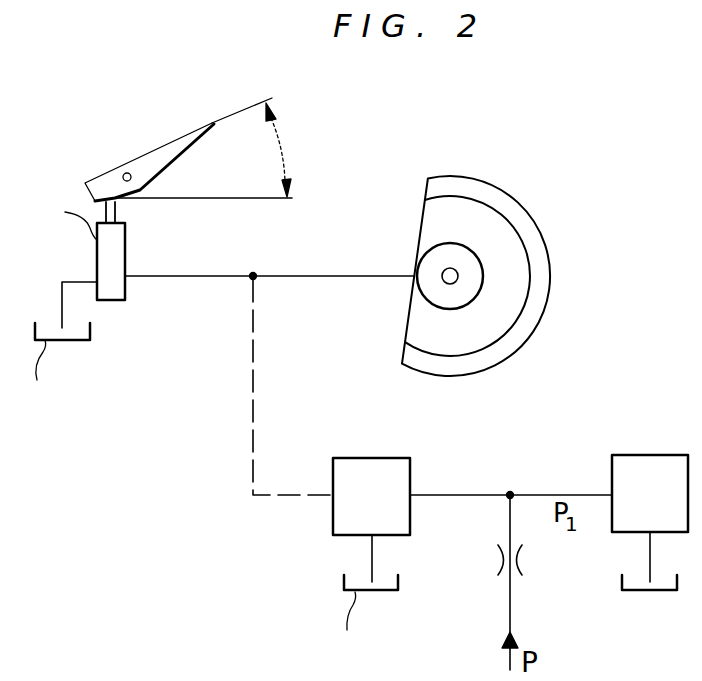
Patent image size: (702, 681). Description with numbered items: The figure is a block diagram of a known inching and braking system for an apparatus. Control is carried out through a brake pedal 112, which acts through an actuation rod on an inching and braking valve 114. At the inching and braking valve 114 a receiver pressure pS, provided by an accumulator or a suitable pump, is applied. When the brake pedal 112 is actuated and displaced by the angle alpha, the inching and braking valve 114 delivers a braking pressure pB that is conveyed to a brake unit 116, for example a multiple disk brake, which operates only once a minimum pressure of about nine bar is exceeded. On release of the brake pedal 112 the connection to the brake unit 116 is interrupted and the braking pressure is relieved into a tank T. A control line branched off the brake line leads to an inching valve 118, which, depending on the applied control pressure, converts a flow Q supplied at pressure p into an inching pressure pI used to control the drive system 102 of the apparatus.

The brake pedal 112 is at (153, 153).
The inching and braking valve 114 is at (100, 253).
The brake unit 116 is at (545, 260).
The inching valve 118 is at (387, 514).
The drive system 102 is at (663, 513).